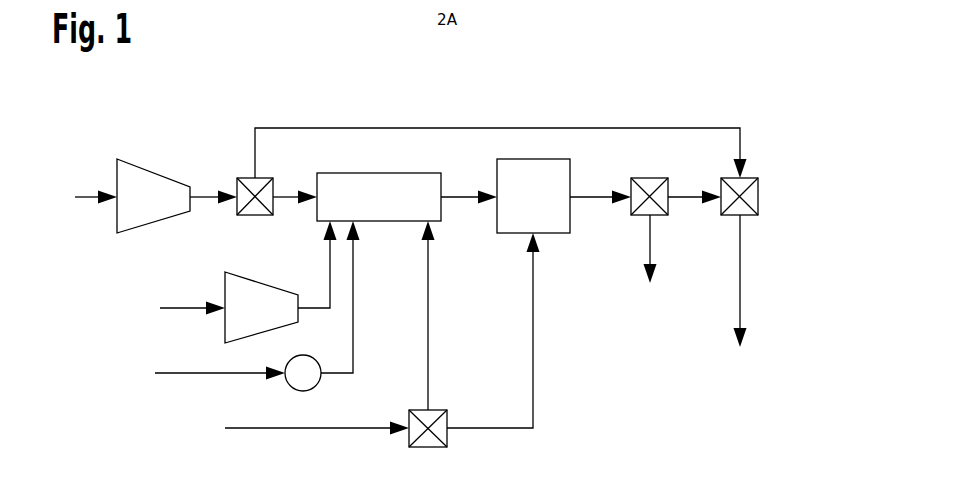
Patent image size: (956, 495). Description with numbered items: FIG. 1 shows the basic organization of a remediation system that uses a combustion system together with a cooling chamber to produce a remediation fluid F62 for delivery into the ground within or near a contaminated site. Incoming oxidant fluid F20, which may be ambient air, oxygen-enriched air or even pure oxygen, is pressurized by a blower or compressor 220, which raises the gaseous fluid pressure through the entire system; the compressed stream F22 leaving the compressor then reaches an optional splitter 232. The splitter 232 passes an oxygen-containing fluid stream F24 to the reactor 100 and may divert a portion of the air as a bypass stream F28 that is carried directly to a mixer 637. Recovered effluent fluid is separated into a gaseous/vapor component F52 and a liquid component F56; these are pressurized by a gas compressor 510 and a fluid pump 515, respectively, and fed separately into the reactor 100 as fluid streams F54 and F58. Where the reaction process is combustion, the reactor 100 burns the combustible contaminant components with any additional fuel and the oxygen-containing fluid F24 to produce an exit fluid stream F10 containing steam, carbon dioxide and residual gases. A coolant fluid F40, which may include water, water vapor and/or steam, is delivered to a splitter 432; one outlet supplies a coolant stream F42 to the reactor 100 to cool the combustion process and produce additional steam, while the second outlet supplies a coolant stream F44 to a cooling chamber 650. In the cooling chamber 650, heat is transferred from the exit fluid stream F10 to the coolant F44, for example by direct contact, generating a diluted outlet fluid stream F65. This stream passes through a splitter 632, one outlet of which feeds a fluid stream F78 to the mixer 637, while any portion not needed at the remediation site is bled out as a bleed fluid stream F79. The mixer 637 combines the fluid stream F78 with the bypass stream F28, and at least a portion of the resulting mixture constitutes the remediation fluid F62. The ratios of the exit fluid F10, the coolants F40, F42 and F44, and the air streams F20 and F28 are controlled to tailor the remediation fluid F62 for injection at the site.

The incoming oxidant fluid F20 is at (96, 195).
The blower or compressor 220 is at (168, 208).
The compressed stream F22 is at (218, 199).
The splitter 232 is at (248, 216).
The bypass stream F28 is at (293, 127).
The oxygen-containing fluid stream F24 is at (287, 194).
The reactor 100 is at (392, 208).
The exit fluid stream F10 is at (470, 194).
The cooling chamber 650 is at (547, 208).
The diluted outlet fluid stream F65 is at (601, 200).
The splitter 632 is at (652, 177).
The fluid stream F78 is at (697, 193).
The mixer 637 is at (760, 195).
The bleed fluid stream F79 is at (652, 236).
The remediation fluid F62 is at (742, 270).
The fluid stream F54 is at (329, 276).
The gas compressor 510 is at (275, 318).
The gaseous/vapor component F52 is at (193, 306).
The liquid component F56 is at (210, 371).
The fluid pump 515 is at (306, 355).
The fluid stream F58 is at (355, 322).
The coolant stream F42 is at (430, 326).
The coolant stream F44 is at (535, 326).
The coolant fluid F40 is at (304, 430).
The splitter 432 is at (427, 448).